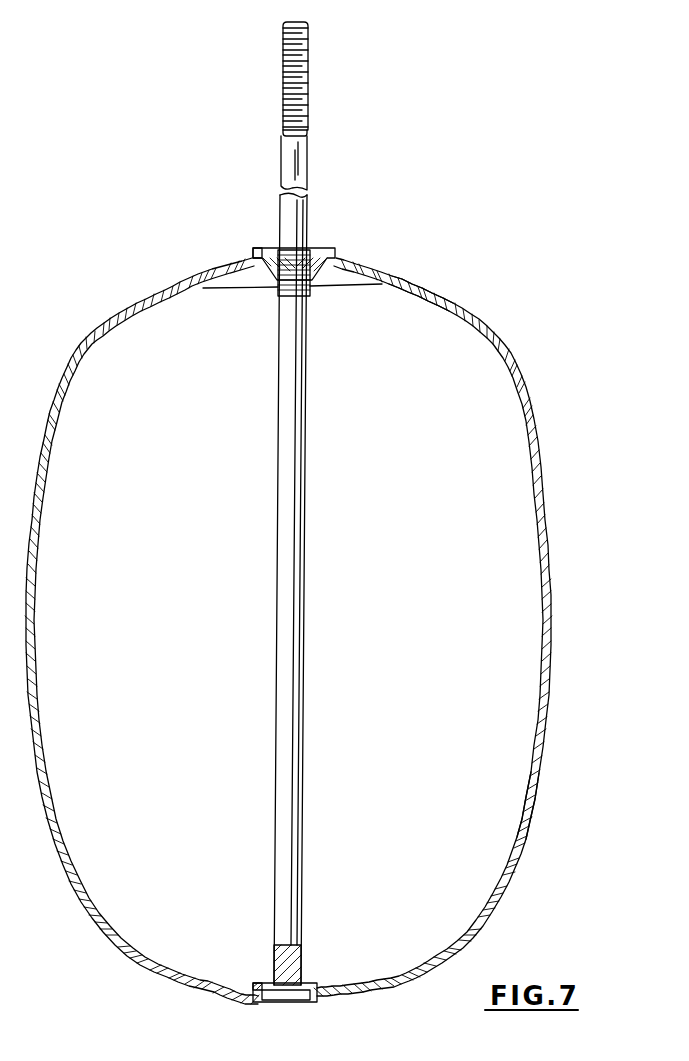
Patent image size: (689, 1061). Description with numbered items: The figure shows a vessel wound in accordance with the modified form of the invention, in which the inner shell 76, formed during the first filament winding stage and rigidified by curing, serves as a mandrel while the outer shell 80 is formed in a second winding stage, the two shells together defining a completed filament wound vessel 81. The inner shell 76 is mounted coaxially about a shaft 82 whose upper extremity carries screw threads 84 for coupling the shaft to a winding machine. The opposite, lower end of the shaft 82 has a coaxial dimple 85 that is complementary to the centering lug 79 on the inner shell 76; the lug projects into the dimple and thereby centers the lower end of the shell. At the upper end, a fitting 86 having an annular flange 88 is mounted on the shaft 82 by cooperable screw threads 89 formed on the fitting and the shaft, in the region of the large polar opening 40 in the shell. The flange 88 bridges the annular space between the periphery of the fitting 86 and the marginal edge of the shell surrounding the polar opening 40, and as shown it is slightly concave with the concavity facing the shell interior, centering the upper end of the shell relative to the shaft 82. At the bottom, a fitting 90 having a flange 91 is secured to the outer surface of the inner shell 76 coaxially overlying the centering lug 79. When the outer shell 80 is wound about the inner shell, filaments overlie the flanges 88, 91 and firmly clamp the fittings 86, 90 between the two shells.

The large polar opening 40 is at (210, 292).
The inner shell 76 is at (520, 810).
The centering lug 79 is at (290, 982).
The outer shell 80 is at (512, 873).
The filament wound vessel 81 is at (434, 278).
The shaft 82 is at (292, 523).
The screw threads 84 is at (307, 127).
The dimple 85 is at (283, 1000).
The fitting 86 is at (330, 252).
The annular flange 88 is at (235, 258).
The screw threads 89 is at (310, 292).
The fitting 90 is at (312, 1002).
The flange 91 is at (258, 983).